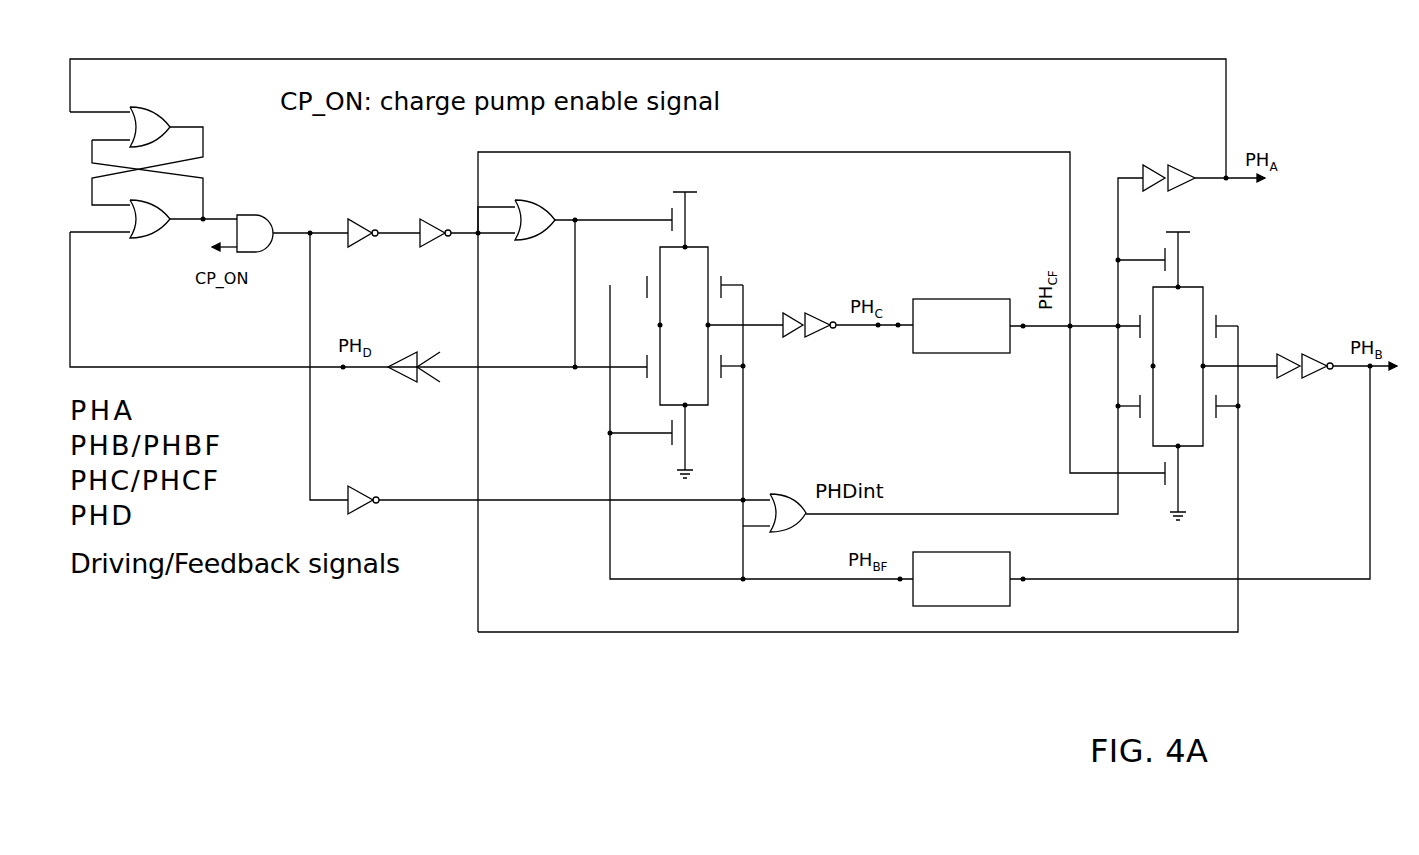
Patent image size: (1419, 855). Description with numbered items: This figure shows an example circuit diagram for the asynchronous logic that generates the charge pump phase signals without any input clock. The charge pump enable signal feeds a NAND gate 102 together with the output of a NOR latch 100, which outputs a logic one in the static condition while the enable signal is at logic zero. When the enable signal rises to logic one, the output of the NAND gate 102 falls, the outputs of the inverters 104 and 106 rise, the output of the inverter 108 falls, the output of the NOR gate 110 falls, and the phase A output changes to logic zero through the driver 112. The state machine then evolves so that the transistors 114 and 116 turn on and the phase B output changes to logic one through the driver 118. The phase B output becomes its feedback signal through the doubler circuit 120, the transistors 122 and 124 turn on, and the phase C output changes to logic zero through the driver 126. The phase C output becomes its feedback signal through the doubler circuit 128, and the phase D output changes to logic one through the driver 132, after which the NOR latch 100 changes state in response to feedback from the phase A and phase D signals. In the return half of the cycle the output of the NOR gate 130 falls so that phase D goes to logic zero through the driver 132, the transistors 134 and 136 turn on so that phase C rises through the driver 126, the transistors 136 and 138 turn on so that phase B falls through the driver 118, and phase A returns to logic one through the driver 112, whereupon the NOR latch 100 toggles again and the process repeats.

The NOR latch 100 is at (140, 255).
The NAND gate 102 is at (258, 222).
The inverter 104 is at (353, 229).
The inverter 106 is at (358, 490).
The inverter 108 is at (426, 229).
The NOR gate 110 is at (790, 500).
The driver 112 is at (1175, 170).
The transistor 114 is at (1175, 258).
The transistor 116 is at (1220, 316).
The driver 118 is at (1306, 355).
The doubler circuit 120 is at (1010, 566).
The transistor 122 is at (680, 430).
The transistor 124 is at (722, 373).
The driver 126 is at (812, 310).
The doubler circuit 128 is at (947, 300).
The NOR gate 130 is at (532, 225).
The driver 132 is at (414, 352).
The transistor 134 is at (700, 216).
The transistor 136 is at (722, 278).
The transistor 138 is at (1222, 415).